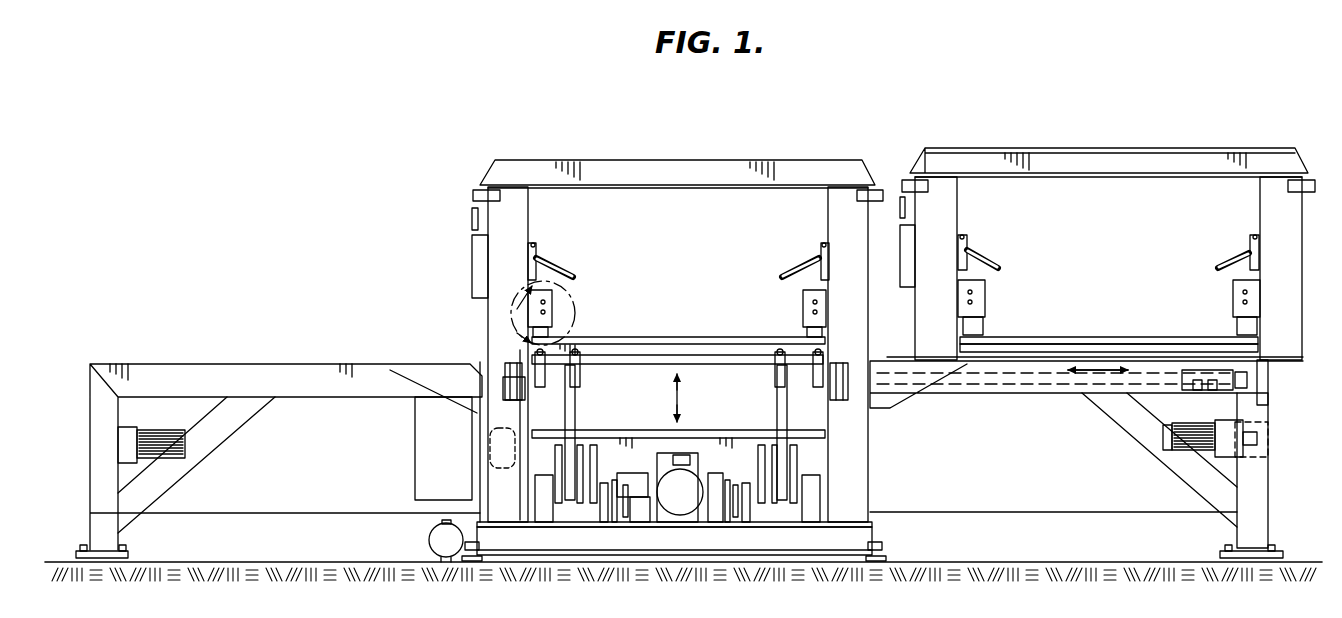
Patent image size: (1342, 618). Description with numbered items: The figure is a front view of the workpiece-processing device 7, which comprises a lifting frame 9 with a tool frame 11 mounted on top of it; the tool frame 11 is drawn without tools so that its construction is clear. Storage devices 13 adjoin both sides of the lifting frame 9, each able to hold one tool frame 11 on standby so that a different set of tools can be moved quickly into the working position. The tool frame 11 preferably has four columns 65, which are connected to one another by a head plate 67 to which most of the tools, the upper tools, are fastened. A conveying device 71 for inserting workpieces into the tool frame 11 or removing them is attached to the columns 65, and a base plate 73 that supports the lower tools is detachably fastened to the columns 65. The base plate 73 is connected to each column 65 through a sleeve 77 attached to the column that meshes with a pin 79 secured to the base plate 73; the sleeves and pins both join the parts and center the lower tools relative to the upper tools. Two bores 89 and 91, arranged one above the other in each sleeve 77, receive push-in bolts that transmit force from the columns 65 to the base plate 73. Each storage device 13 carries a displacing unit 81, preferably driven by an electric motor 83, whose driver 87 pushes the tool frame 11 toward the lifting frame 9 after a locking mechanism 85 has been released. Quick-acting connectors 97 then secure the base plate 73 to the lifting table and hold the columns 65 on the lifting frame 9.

The apparatus 7 is at (280, 150).
The lifting frame 9 is at (666, 334).
The tool frame 11 is at (701, 159).
The storage device 13 is at (312, 400).
The column 65 is at (488, 322).
The head plate 67 is at (567, 165).
The conveying device 71 is at (563, 272).
The base plate 73 is at (706, 338).
The sleeve 77 is at (553, 317).
The pin 79 is at (578, 287).
The displacing unit 81 is at (1163, 400).
The electric motor 83 is at (162, 427).
The locking mechanism 85 is at (1272, 388).
The driver 87 is at (1148, 343).
The upper bore 89 is at (803, 300).
The lower bore 91 is at (805, 315).
The quick-acting connector 97 is at (578, 358).